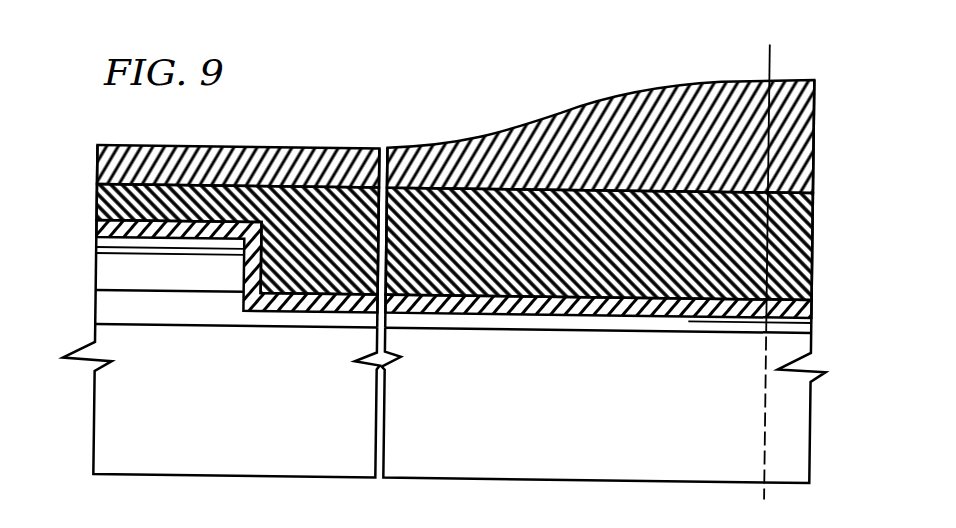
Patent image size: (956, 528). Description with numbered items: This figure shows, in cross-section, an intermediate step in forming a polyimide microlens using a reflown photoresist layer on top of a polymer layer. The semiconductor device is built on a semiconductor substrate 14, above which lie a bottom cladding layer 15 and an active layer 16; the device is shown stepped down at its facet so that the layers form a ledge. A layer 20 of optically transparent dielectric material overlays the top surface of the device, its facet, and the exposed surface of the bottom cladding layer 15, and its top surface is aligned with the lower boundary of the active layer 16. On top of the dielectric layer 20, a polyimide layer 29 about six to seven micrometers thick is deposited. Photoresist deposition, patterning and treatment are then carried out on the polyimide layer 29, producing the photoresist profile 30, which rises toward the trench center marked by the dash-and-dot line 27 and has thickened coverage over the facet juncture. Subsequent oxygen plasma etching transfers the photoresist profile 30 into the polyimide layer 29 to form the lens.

The semiconductor substrate 14 is at (97, 441).
The bottom cladding layer 15 is at (97, 307).
The active layer 16 is at (97, 270).
The dielectric layer 20 is at (96, 227).
The dash-and-dot line 27 is at (768, 54).
The polyimide layer 29 is at (815, 209).
The photoresist profile 30 is at (521, 123).